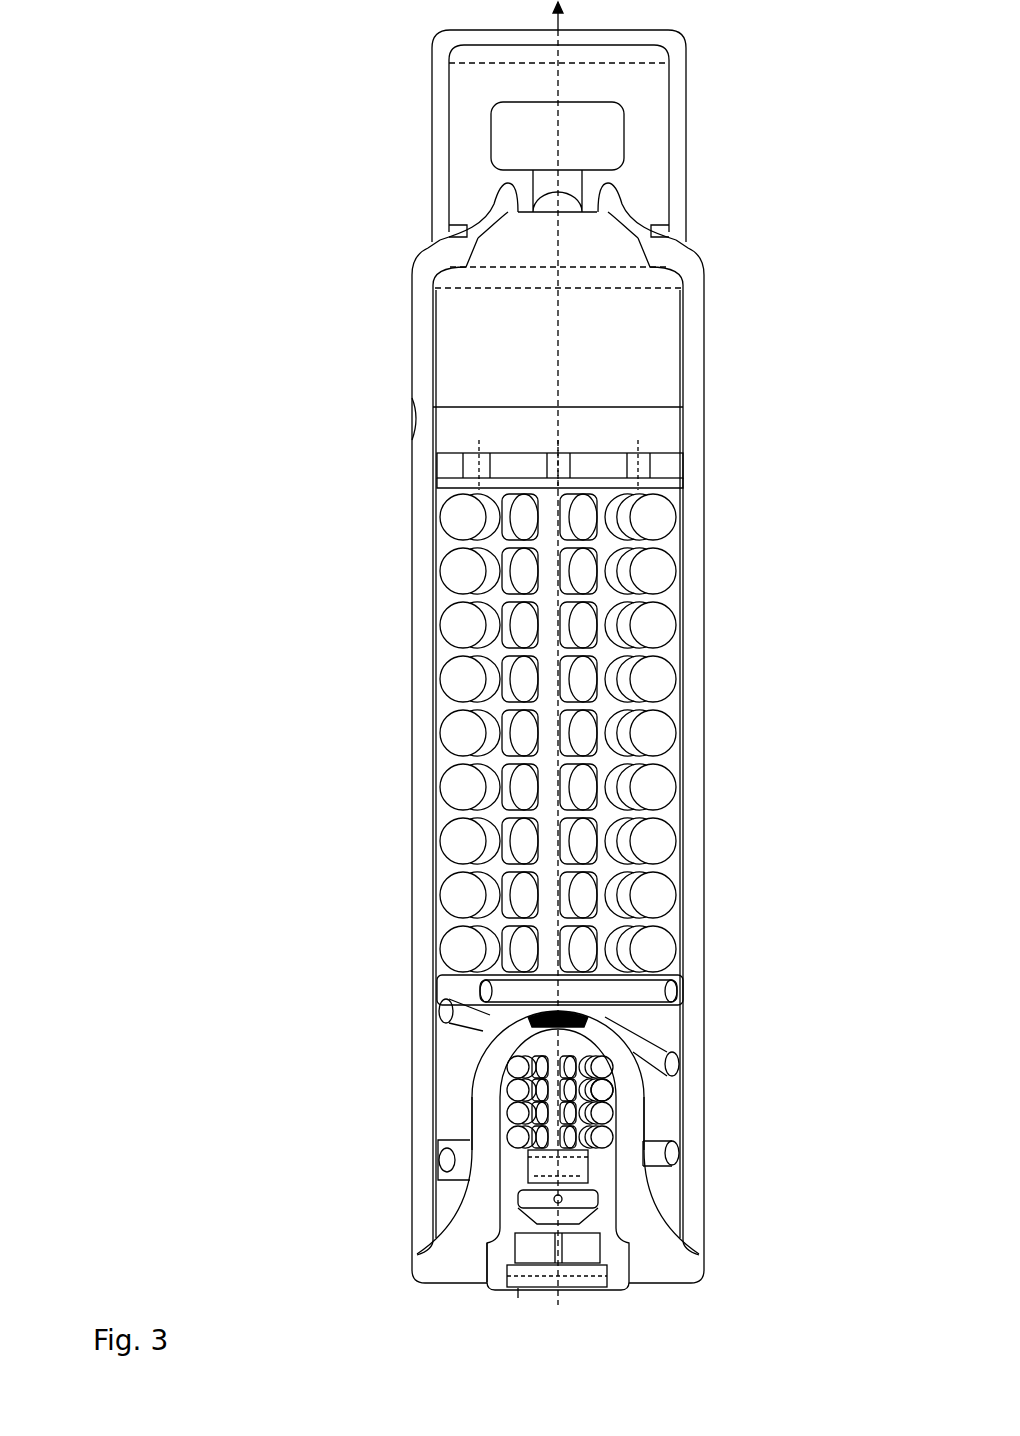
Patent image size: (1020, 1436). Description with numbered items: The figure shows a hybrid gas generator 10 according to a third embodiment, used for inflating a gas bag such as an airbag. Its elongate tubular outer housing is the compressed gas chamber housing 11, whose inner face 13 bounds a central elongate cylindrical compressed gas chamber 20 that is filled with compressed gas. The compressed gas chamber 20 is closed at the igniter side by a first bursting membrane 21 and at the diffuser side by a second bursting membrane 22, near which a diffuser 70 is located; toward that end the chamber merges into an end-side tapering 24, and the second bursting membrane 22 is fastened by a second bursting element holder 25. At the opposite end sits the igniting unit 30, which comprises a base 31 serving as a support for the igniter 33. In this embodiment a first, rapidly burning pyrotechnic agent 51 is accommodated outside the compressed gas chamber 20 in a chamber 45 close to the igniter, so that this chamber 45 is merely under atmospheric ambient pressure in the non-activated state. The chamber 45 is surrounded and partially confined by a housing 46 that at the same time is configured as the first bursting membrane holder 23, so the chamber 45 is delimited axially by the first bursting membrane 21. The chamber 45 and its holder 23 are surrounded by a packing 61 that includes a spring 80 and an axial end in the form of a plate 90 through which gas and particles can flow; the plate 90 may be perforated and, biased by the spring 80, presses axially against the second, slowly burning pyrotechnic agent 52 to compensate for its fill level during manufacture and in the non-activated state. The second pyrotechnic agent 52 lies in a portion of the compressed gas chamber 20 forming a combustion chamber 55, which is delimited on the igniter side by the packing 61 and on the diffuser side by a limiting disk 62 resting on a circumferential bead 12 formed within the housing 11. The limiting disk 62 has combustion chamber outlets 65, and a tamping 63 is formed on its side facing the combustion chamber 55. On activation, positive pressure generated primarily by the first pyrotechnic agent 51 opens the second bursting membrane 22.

The hybrid gas generator 10 is at (178, 468).
The compressed gas chamber housing 11 is at (421, 719).
The bead 12 is at (406, 443).
The inner face 13 is at (445, 812).
The compressed gas chamber 20 is at (444, 596).
The first bursting membrane 21 is at (510, 1047).
The second bursting membrane 22 is at (660, 232).
The first bursting element holder 23 is at (488, 1073).
The end-side tapering 24 is at (470, 226).
The second bursting element holder 25 is at (610, 185).
The igniting unit 30 is at (614, 1310).
The base 31 is at (620, 1273).
The igniter 33 is at (600, 1200).
The chamber 45 is at (600, 1123).
The housing 46 is at (558, 1123).
The first pyrotechnic agent 51 is at (600, 1091).
The second pyrotechnic agent 52 is at (655, 832).
The combustion chamber 55 is at (443, 865).
The packing 61 is at (437, 988).
The limiting disk 62 is at (672, 464).
The tamping 63 is at (675, 485).
The combustion chamber outlets 65 is at (568, 458).
The diffuser 70 is at (445, 88).
The spring 80 is at (653, 1055).
The plate 90 is at (660, 980).